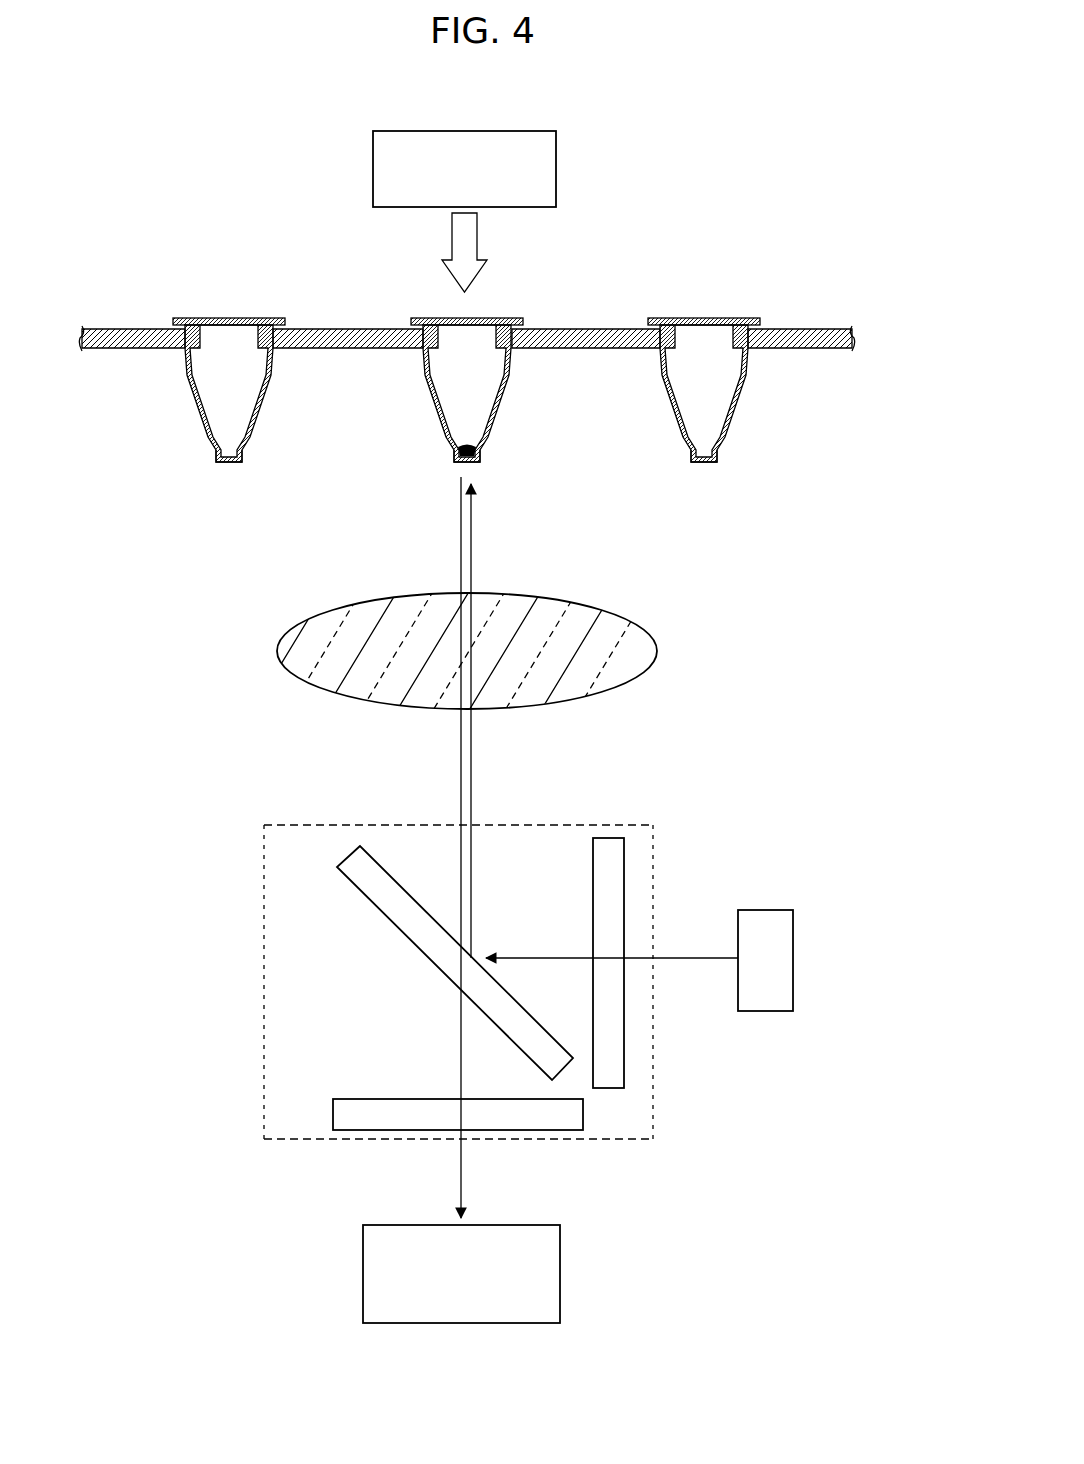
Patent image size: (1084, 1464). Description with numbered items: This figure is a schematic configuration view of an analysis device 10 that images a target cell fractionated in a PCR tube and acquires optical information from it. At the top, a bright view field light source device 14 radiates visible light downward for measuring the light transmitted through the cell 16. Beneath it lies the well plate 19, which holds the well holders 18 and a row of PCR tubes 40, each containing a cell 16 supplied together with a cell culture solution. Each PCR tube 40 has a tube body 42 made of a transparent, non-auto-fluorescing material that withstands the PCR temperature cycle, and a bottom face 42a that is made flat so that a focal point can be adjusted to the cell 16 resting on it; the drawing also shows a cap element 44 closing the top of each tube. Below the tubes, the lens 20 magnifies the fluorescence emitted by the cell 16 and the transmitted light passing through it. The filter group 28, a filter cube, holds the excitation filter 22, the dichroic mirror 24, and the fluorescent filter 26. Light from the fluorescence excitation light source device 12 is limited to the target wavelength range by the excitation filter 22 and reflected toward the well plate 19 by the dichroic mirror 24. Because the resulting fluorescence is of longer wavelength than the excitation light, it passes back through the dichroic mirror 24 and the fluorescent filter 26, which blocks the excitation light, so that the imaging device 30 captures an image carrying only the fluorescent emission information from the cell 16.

The analysis device 10 is at (716, 167).
The fluorescence excitation light source device 12 is at (767, 910).
The bright view field light source device 14 is at (556, 170).
The cell 16 is at (452, 442).
The well holder 18 is at (810, 330).
The well plate 19 is at (845, 413).
The lens 20 is at (657, 651).
The excitation filter 22 is at (593, 878).
The dichroic mirror 24 is at (389, 921).
The fluorescent filter 26 is at (333, 1114).
The filter group 28 is at (621, 825).
The imaging device 30 is at (461, 1323).
The PCR tube 40 is at (464, 366).
The tube body 42 is at (268, 413).
The bottom face 42a is at (213, 452).
The cap 44 is at (221, 318).